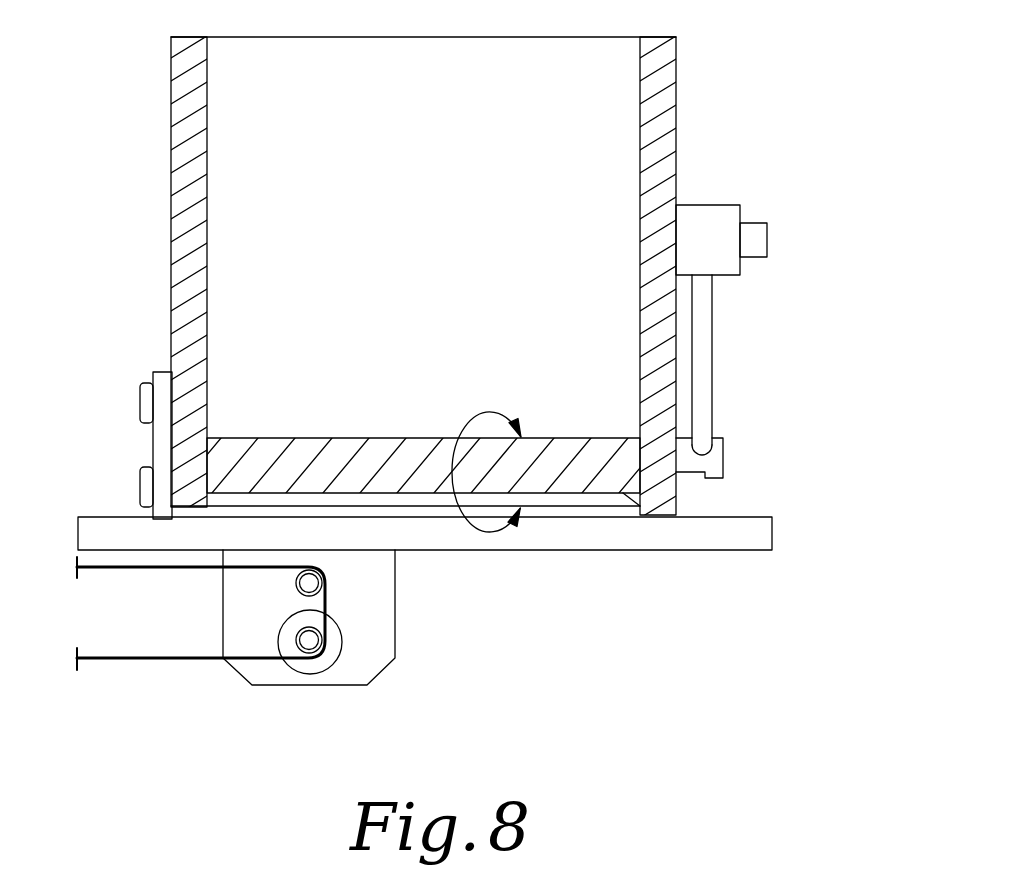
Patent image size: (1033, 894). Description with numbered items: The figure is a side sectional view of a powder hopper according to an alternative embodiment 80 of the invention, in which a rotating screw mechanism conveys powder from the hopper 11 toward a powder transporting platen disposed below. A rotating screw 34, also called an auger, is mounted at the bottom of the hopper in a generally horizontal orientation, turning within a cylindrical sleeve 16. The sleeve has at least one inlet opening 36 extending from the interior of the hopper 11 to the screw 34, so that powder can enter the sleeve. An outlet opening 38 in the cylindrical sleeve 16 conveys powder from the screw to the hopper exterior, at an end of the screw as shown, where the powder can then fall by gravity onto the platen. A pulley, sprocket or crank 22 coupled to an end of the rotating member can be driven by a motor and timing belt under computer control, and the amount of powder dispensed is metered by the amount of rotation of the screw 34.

The alternative embodiment 80 is at (66, 190).
The hopper 11 is at (665, 97).
The cylindrical sleeve 16 is at (607, 440).
The crank 22 is at (703, 312).
The rotating screw 34 is at (403, 485).
The inlet opening 36 is at (393, 432).
The outlet opening 38 is at (226, 484).